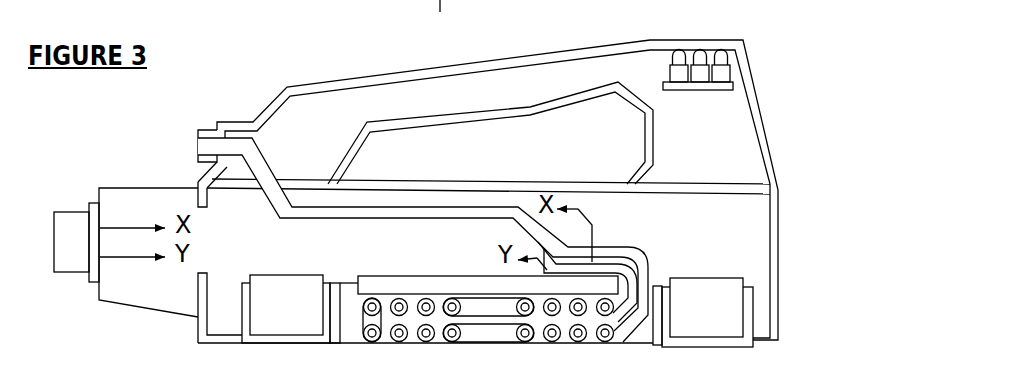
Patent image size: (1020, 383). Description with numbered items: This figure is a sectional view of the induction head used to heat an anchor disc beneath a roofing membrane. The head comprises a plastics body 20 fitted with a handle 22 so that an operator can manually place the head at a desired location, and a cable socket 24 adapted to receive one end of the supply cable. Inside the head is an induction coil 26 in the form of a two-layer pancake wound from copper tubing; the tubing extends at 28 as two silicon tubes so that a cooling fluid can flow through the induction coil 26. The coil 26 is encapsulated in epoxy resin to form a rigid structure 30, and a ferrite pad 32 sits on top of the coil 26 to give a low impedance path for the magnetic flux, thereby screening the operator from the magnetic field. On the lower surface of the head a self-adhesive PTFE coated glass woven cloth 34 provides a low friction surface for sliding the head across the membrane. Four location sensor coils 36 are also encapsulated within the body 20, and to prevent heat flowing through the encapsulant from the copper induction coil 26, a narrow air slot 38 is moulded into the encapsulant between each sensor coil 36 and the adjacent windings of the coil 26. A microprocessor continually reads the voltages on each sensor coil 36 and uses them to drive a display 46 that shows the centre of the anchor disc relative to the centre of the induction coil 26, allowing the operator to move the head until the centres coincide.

The plastics body 20 is at (773, 143).
The handle 22 is at (460, 86).
The cable socket 24 is at (72, 211).
The induction coil 26 is at (373, 344).
The tubing extension 28 is at (268, 157).
The rigid structure 30 is at (348, 298).
The ferrite pad 32 is at (438, 284).
The PTFE coated glass woven cloth 34 is at (719, 349).
The location sensor coils 36 is at (280, 274).
The air slot 38 is at (336, 334).
The display 46 is at (702, 49).